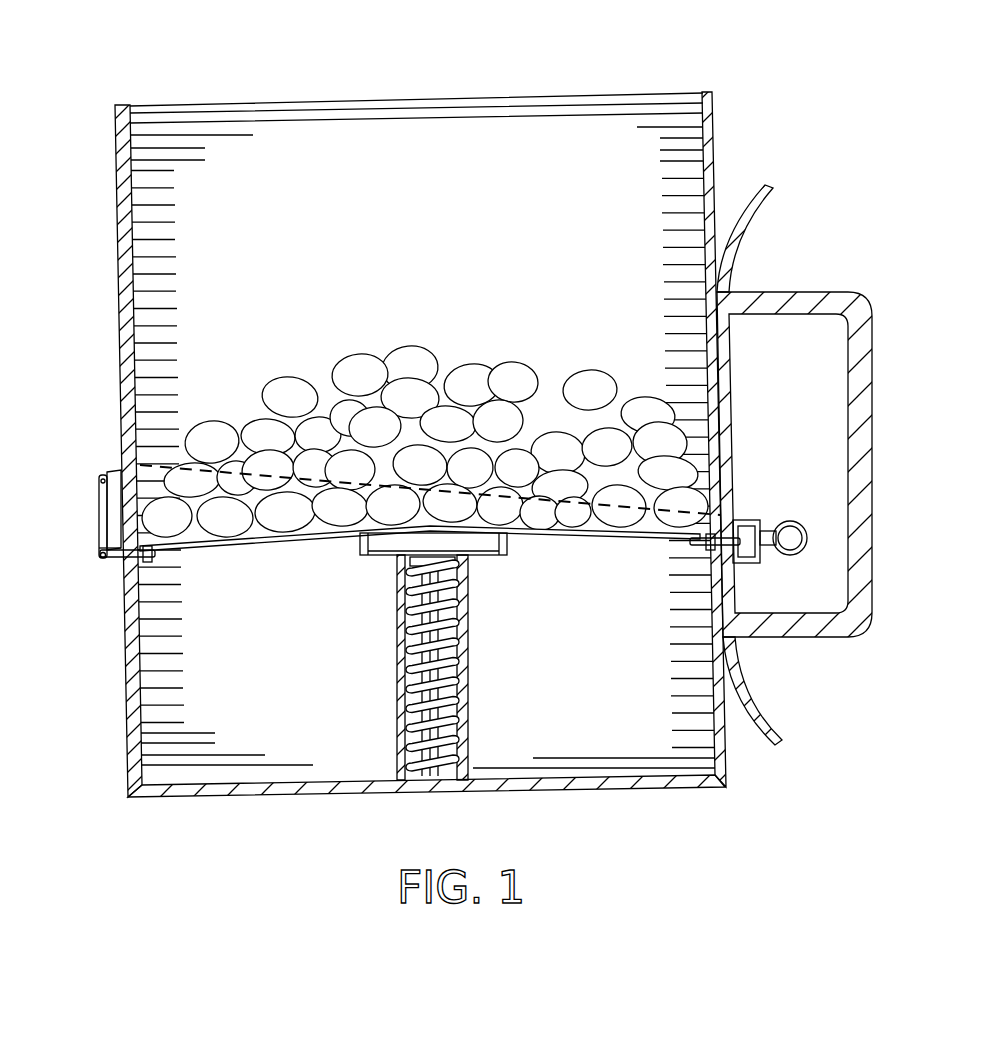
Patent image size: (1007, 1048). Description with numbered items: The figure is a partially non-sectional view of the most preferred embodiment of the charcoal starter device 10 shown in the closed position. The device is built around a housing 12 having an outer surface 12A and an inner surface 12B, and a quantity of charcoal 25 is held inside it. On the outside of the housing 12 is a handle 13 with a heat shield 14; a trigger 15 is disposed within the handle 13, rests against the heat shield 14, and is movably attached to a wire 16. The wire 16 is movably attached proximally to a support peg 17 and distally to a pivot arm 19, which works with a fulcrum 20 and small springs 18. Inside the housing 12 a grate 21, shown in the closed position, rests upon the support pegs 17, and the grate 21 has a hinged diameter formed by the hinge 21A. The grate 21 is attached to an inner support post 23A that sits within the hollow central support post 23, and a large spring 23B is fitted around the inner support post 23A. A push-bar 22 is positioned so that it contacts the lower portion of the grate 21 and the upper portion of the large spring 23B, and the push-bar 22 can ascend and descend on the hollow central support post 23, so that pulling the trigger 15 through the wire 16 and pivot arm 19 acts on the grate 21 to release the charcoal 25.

The charcoal starter device 10 is at (447, 456).
The housing 12 is at (101, 107).
The outer surface of housing 12A is at (118, 245).
The inner surface of housing 12B is at (132, 153).
The handle 13 is at (848, 292).
The heat shield 14 is at (757, 185).
The trigger 15 is at (790, 520).
The wire 16 is at (108, 472).
The support pegs 17 is at (116, 560).
The small springs 18 is at (150, 562).
The pivot arm 19 is at (121, 521).
The fulcrum 20 is at (100, 548).
The grate 21 is at (237, 553).
The hinge on grate 21A is at (463, 567).
The push-bar 22 is at (368, 558).
The central support post 23 is at (397, 757).
The inner support post 23A is at (442, 782).
The large spring 23B is at (458, 712).
The charcoal 25 is at (402, 352).